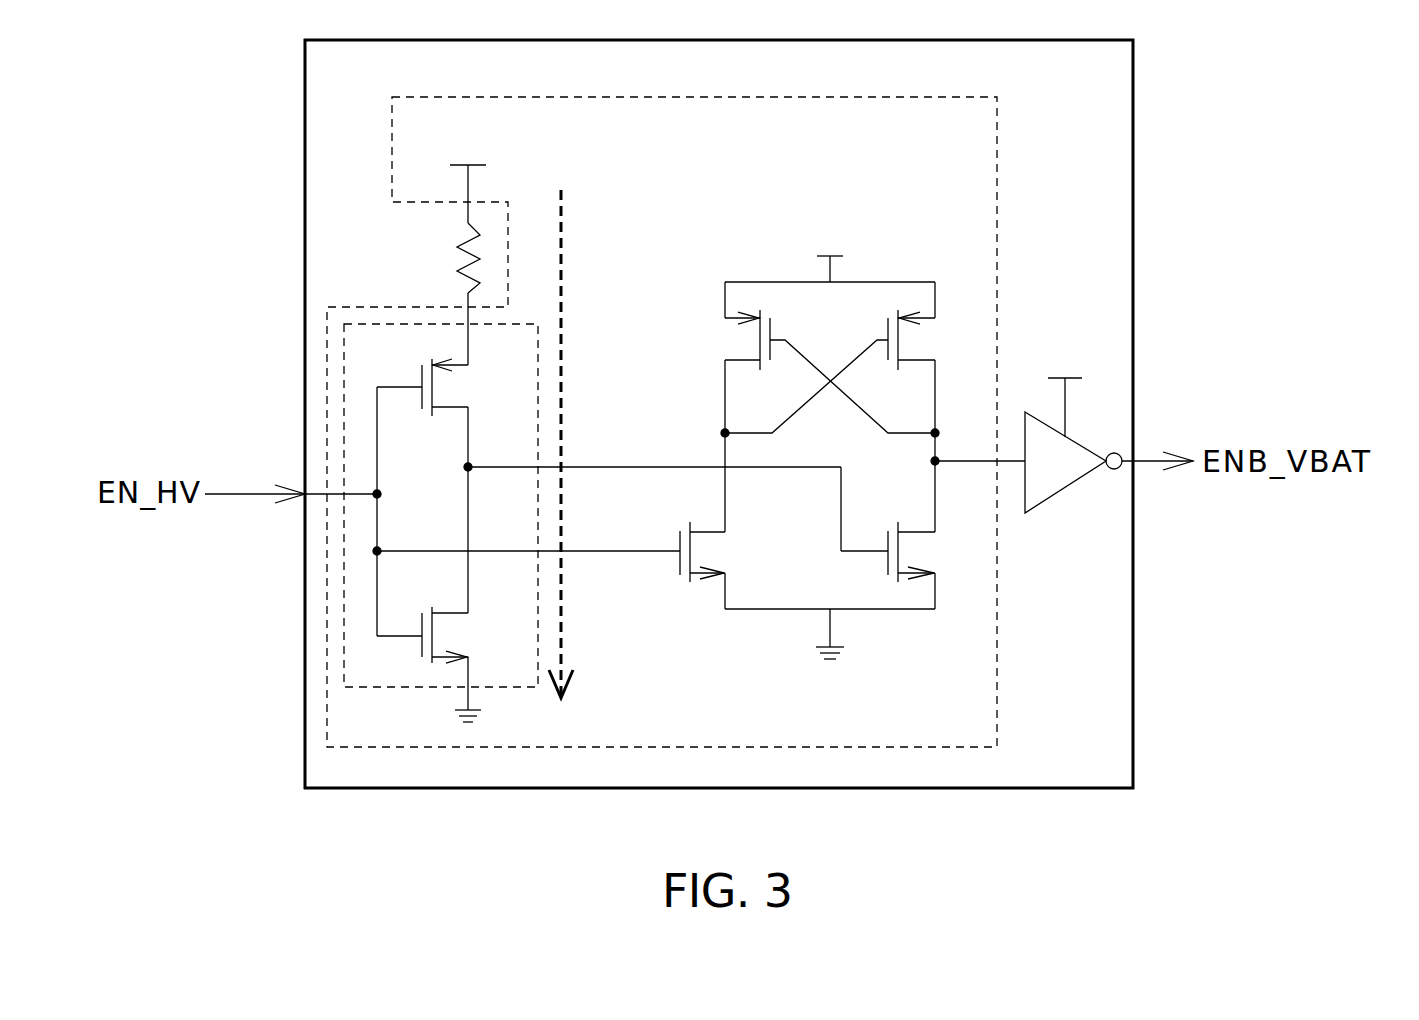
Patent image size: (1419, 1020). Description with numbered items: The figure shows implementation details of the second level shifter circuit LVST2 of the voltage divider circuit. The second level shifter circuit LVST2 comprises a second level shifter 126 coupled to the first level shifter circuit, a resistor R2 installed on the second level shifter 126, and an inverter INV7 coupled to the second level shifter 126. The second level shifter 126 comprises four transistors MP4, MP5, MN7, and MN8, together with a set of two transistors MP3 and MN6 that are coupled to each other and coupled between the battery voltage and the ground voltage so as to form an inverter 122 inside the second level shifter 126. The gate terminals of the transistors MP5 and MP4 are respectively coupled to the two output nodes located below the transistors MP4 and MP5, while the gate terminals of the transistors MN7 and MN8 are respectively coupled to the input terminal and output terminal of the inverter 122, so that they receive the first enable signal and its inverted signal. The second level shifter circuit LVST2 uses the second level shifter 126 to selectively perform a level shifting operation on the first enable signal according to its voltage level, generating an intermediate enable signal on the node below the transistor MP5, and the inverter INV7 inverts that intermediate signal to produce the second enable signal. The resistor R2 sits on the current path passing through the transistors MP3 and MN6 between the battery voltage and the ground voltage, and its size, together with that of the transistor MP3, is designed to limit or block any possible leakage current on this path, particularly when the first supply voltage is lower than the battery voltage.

The inverter 122 is at (448, 531).
The second level shifter 126 is at (950, 725).
The second level shifter circuit LVST2 is at (985, 85).
The resistor R2 is at (444, 258).
The transistor MP3 is at (472, 387).
The transistor MN6 is at (475, 635).
The transistor MP4 is at (727, 326).
The transistor MP5 is at (932, 326).
The transistor MN7 is at (721, 552).
The transistor MN8 is at (935, 552).
The inverter INV7 is at (1065, 489).